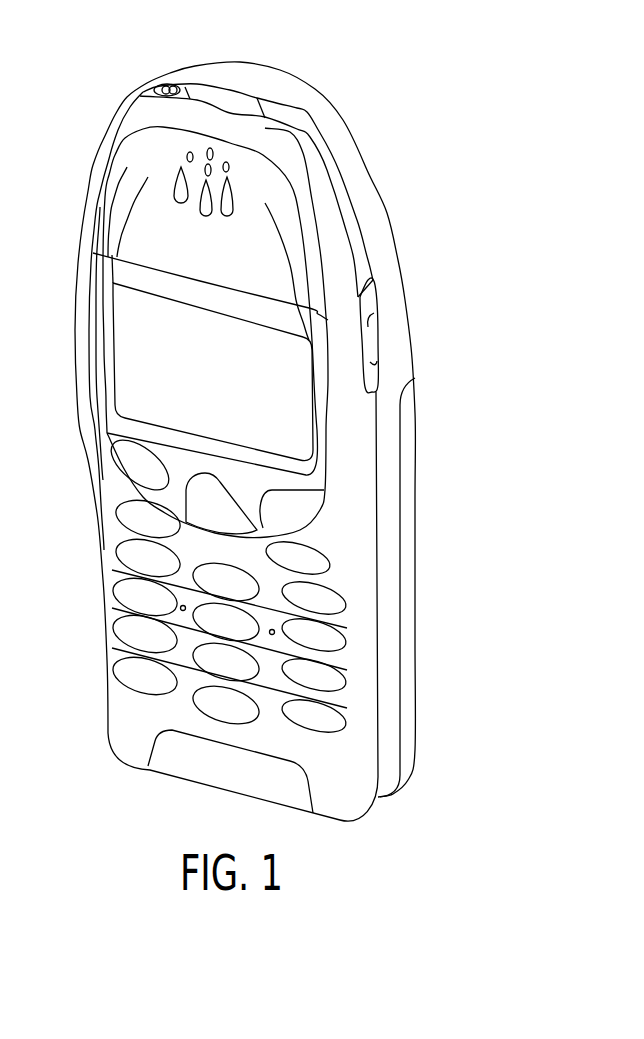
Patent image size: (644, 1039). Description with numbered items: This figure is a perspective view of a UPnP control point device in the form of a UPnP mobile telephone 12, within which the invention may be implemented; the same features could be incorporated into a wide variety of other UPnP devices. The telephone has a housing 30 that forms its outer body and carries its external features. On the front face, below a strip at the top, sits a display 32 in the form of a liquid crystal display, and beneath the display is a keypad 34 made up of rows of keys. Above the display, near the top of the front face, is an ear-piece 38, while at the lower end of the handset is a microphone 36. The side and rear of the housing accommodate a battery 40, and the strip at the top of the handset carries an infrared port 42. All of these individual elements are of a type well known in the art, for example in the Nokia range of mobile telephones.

The UPnP mobile telephone 12 is at (352, 74).
The housing 30 is at (380, 215).
The display 32 is at (288, 413).
The keypad 34 is at (313, 720).
The microphone 36 is at (173, 758).
The ear-piece 38 is at (183, 176).
The battery 40 is at (410, 702).
The infrared port 42 is at (227, 97).